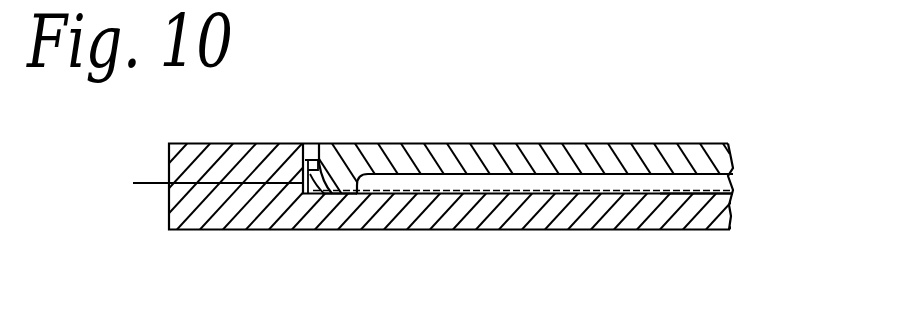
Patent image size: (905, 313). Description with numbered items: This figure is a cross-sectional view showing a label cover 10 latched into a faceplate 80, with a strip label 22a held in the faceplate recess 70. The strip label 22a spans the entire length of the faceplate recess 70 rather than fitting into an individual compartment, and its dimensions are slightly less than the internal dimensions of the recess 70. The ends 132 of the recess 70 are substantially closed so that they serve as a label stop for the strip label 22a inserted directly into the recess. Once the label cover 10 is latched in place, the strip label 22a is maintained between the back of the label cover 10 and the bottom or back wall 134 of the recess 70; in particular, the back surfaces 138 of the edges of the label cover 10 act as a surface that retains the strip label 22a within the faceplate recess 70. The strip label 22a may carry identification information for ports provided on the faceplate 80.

The label cover 10 is at (588, 150).
The faceplate 80 is at (195, 147).
The faceplate recess 70 is at (133, 183).
The ends of the recess 132 is at (313, 158).
The back surfaces of the edges of the label cover 138 is at (347, 194).
The strip label 22a is at (733, 192).
The back wall of the recess 134 is at (693, 202).